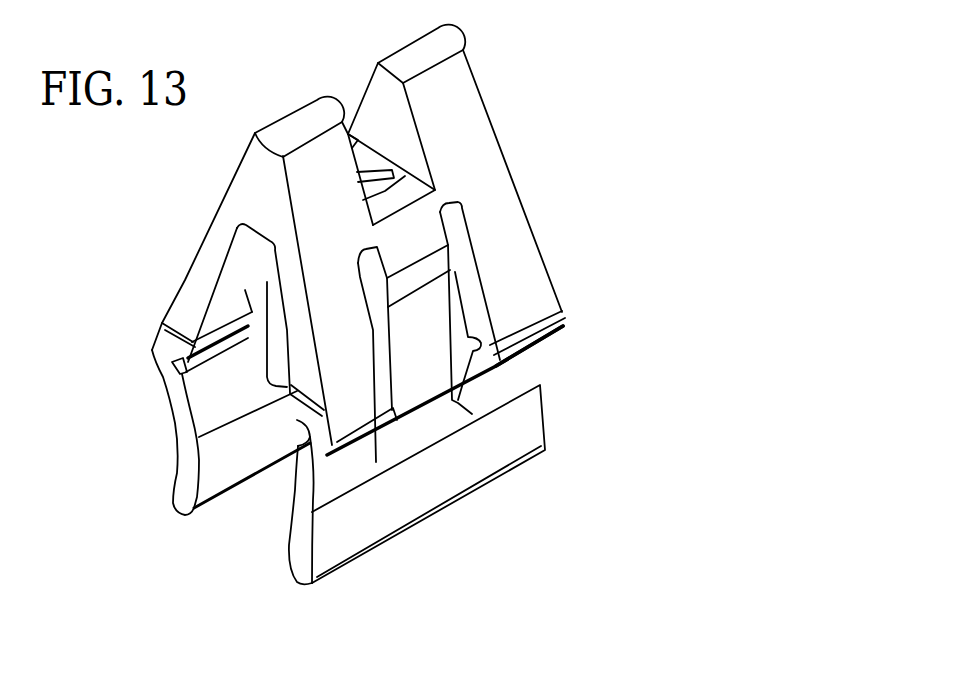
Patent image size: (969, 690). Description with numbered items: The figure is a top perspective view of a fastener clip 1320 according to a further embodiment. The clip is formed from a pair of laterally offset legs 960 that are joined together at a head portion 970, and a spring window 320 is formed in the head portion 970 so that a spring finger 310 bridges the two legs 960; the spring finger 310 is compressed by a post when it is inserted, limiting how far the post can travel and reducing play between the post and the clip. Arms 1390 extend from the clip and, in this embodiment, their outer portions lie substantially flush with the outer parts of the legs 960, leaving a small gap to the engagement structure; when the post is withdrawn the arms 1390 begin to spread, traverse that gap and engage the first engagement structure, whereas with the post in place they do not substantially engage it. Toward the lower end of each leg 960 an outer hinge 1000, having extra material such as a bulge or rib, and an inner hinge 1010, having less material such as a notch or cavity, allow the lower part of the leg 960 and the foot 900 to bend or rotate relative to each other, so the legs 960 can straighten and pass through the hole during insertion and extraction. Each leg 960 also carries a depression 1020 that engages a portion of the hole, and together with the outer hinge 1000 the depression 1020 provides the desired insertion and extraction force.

The fastener clip 1320 is at (549, 163).
The legs 960 is at (515, 262).
The head portion 970 is at (481, 51).
The spring window 320 is at (373, 60).
The spring finger 310 is at (362, 153).
The arms 1390 is at (425, 396).
The outer hinge 1000 is at (547, 325).
The inner hinge 1010 is at (181, 379).
The foot 900 is at (213, 473).
The depression 1020 is at (350, 472).